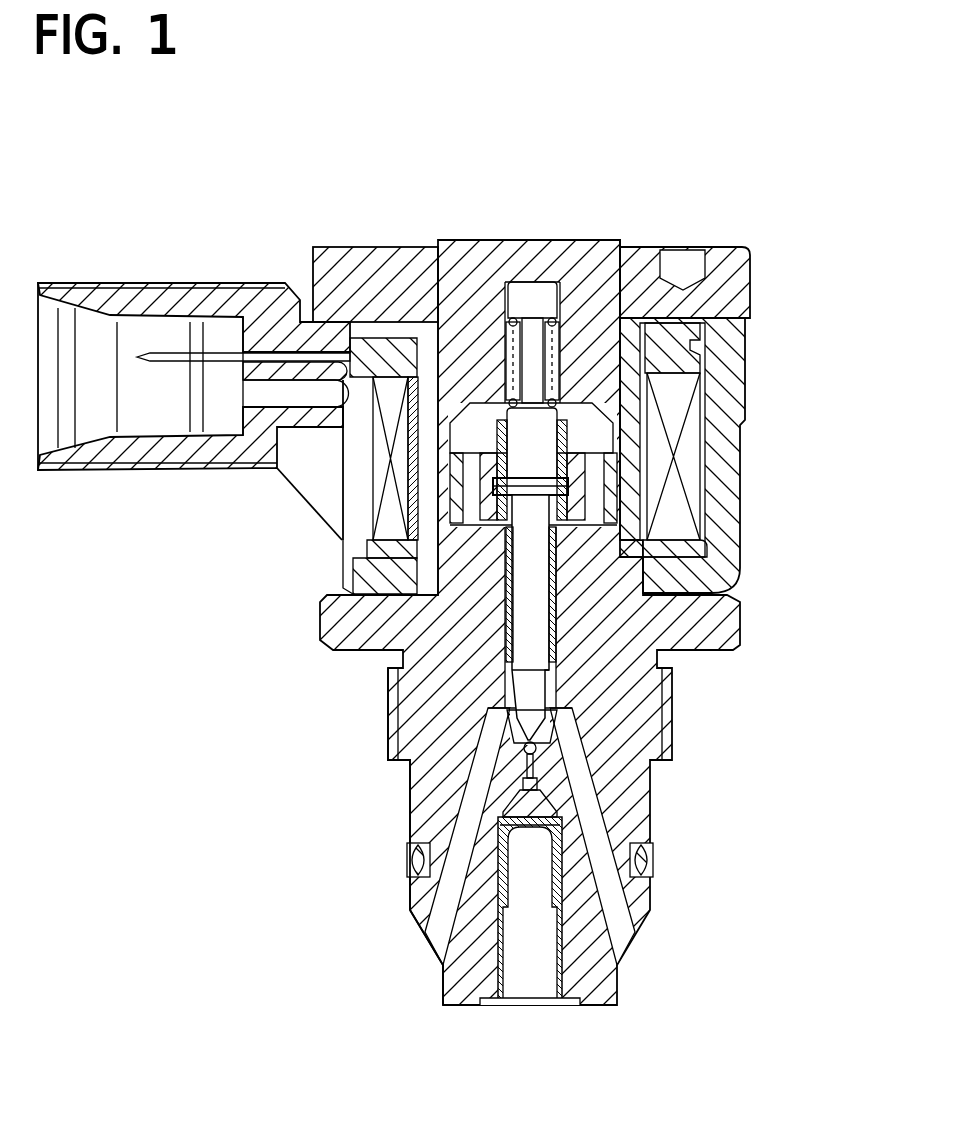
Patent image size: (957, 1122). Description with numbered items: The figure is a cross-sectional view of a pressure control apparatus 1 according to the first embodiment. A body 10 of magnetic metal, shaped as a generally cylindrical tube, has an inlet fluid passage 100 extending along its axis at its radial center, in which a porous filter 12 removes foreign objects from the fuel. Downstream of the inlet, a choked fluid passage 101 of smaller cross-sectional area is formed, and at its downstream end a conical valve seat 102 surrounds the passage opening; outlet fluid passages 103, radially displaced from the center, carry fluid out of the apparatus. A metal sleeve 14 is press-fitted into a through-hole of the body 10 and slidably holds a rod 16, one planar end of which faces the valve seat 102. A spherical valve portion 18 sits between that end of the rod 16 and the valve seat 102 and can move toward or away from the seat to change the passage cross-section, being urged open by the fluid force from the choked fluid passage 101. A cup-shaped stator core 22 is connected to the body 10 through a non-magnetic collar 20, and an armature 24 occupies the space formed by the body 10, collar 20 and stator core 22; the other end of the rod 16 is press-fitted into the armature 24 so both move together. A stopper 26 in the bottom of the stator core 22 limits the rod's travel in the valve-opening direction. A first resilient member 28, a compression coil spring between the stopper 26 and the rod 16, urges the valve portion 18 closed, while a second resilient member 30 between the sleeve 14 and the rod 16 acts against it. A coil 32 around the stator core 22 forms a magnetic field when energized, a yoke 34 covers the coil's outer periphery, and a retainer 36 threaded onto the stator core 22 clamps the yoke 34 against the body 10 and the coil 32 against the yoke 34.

The pressure control apparatus 1 is at (265, 221).
The body 10 is at (612, 660).
The porous filter 12 is at (505, 1005).
The sleeve 14 is at (393, 677).
The rod 16 is at (533, 643).
The valve portion 18 is at (540, 746).
The collar 20 is at (624, 530).
The stator core 22 is at (566, 263).
The armature 24 is at (480, 487).
The stopper 26 is at (537, 298).
The first resilient member 28 is at (497, 318).
The second resilient member 30 is at (470, 540).
The coil 32 is at (670, 512).
The yoke 34 is at (730, 385).
The retainer 36 is at (731, 268).
The inlet fluid passage 100 is at (503, 888).
The choked fluid passage 101 is at (530, 770).
The valve seat 102 is at (525, 742).
The outlet fluid passages 103 is at (437, 940).